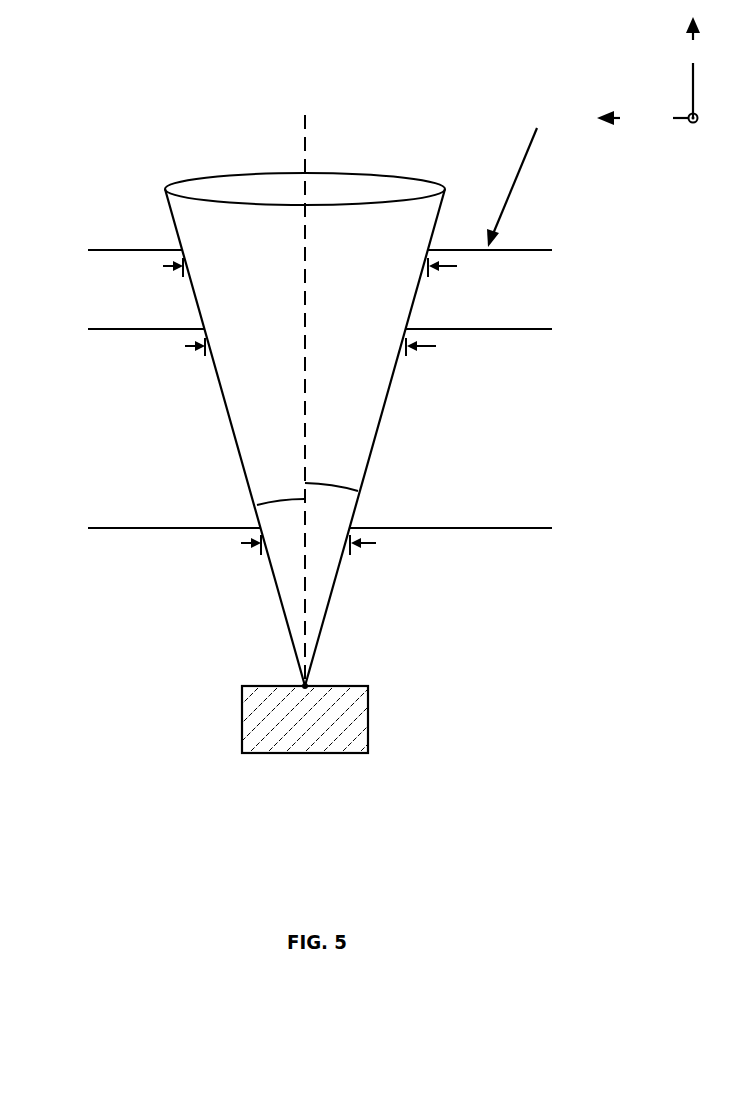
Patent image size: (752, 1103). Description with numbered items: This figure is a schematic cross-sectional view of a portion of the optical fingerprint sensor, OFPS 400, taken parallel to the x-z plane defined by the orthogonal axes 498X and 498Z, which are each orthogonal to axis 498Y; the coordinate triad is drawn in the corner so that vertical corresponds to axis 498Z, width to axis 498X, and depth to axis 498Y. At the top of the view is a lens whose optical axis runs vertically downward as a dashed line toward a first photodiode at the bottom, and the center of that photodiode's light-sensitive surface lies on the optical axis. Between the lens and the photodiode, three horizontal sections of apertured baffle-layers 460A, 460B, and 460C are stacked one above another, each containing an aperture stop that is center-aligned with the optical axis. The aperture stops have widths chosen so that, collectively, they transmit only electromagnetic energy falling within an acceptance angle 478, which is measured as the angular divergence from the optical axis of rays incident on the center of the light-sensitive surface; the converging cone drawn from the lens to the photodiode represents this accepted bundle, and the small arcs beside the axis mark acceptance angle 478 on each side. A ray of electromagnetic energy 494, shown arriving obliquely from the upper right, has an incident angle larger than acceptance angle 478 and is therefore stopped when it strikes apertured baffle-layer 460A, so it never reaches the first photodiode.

The OFPS 400 is at (95, 80).
The apertured baffle-layer 460A is at (108, 249).
The apertured baffle-layer 460B is at (108, 330).
The apertured baffle-layer 460C is at (108, 527).
The acceptance angle 478 is at (277, 492).
The ray of electromagnetic energy 494 is at (518, 160).
The axis 498X is at (643, 118).
The axis 498Y is at (689, 114).
The axis 498Z is at (693, 67).